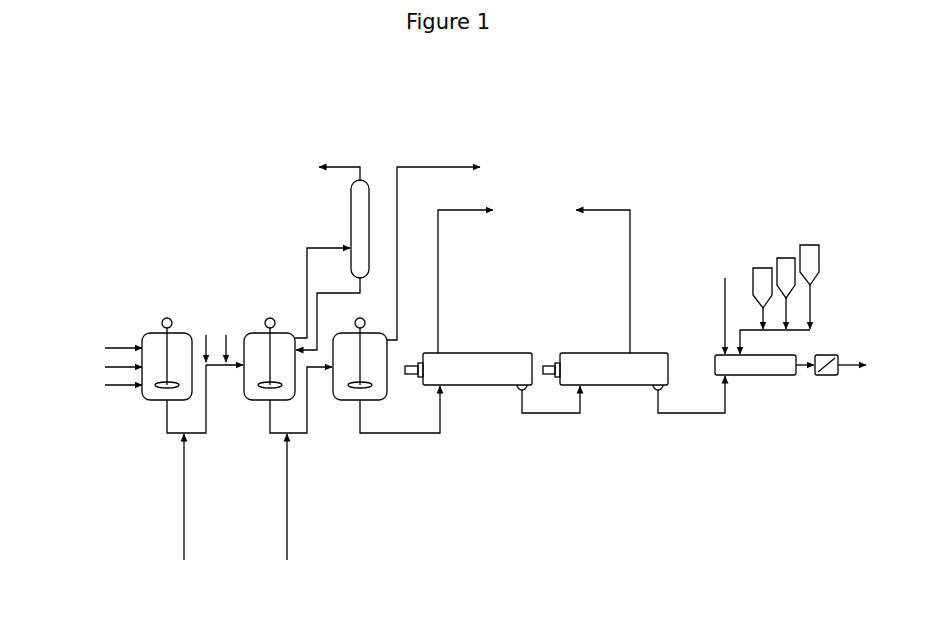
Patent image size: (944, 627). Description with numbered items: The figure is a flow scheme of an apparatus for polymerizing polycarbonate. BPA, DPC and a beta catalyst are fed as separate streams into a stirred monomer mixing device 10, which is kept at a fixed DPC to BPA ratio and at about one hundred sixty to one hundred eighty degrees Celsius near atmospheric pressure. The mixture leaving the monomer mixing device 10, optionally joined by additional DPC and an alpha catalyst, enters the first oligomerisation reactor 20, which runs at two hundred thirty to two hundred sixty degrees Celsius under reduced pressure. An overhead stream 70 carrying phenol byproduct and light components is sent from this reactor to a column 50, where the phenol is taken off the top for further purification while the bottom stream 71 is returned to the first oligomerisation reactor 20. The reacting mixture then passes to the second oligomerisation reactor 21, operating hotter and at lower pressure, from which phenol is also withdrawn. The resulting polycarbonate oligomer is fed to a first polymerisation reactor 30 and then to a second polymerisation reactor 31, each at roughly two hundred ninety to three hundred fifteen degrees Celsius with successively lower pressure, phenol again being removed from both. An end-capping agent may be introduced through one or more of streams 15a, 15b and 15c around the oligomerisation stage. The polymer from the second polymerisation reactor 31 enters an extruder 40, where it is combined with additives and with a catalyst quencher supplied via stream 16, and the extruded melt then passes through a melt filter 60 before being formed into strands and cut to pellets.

The monomer mixing device 10 is at (151, 409).
The first oligomerisation reactor 20 is at (254, 409).
The second oligomerisation reactor 21 is at (345, 409).
The first polymerisation reactor 30 is at (463, 351).
The second polymerisation reactor 31 is at (609, 351).
The extruder 40 is at (749, 381).
The column 50 is at (346, 221).
The melt filter 60 is at (833, 381).
The overhead stream 70 is at (315, 293).
The bottom stream 71 is at (328, 314).
The end-capping agent stream 15a is at (141, 393).
The end-capping agent stream 15b is at (183, 509).
The end-capping agent stream 15c is at (287, 509).
The catalyst quencher stream 16 is at (725, 305).